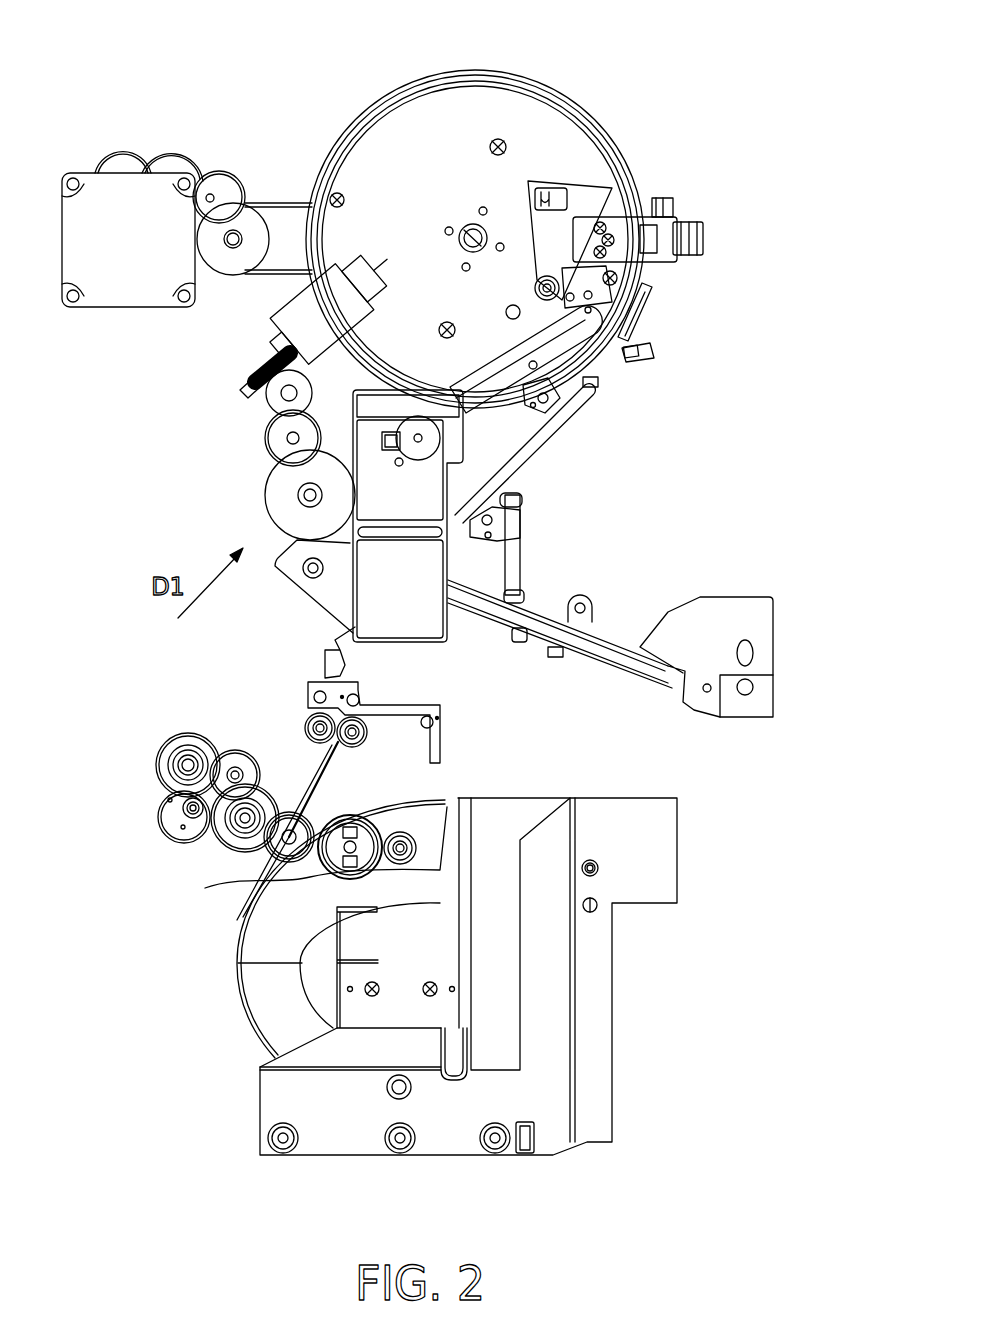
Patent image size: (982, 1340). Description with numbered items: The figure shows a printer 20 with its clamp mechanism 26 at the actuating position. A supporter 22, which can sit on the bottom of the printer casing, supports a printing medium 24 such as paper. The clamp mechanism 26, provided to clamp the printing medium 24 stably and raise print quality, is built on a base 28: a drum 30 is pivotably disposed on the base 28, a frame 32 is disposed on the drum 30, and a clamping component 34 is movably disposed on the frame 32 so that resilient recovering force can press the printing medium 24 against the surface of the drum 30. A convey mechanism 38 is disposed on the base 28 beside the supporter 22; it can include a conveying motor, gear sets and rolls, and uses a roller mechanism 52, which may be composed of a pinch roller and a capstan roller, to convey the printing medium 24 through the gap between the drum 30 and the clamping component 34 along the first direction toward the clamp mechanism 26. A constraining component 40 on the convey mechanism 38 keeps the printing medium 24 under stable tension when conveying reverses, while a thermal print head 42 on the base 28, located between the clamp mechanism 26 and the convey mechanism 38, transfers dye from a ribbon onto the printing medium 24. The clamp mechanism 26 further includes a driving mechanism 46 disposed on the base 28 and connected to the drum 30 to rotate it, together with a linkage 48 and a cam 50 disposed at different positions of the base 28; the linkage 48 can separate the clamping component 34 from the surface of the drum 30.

The printer 20 is at (697, 58).
The supporter 22 is at (597, 1082).
The printing medium 24 is at (265, 1003).
The clamp mechanism 26 is at (805, 560).
The base 28 is at (600, 645).
The drum 30 is at (580, 165).
The frame 32 is at (632, 253).
The clamping component 34 is at (703, 243).
The convey mechanism 38 is at (160, 760).
The constraining component 40 is at (250, 883).
The thermal print head 42 is at (640, 313).
The driving mechanism 46 is at (125, 290).
The linkage 48 is at (560, 343).
The cam 50 is at (273, 323).
The roller mechanism 52 is at (317, 693).